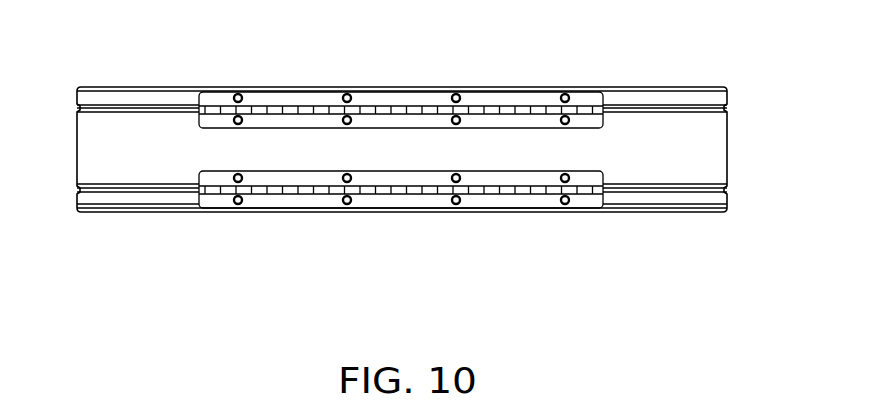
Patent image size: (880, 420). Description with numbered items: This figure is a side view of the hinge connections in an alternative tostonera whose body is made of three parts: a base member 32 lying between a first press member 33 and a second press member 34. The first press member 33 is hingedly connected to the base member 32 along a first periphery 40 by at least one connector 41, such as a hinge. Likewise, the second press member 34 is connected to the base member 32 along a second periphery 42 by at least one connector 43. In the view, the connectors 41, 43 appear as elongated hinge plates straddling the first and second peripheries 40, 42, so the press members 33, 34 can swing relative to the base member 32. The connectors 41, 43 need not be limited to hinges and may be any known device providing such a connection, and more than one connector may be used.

The base member 32 is at (713, 146).
The first press member 33 is at (658, 100).
The second press member 34 is at (645, 200).
The first periphery 40 is at (727, 111).
The connector 41 is at (478, 102).
The second periphery 42 is at (727, 192).
The connector 43 is at (495, 200).